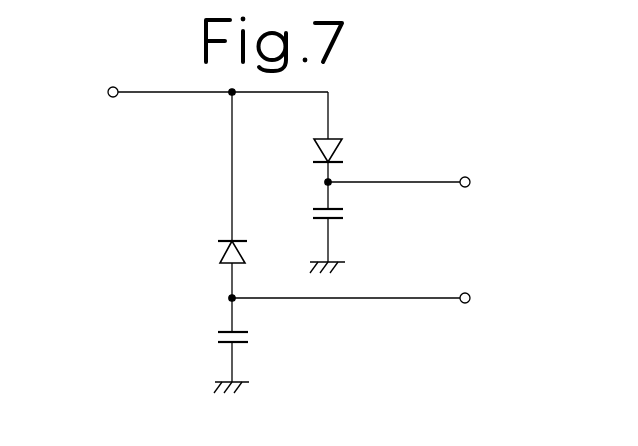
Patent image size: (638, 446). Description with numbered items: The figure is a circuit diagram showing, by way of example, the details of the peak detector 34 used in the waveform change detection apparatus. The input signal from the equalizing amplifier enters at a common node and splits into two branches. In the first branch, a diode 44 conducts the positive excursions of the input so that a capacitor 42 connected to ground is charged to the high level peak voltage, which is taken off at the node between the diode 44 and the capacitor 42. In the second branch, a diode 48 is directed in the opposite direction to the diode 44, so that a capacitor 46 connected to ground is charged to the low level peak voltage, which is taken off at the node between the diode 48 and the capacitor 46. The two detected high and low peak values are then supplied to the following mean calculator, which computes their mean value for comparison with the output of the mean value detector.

The peak detector 34 is at (413, 417).
The diode 44 is at (338, 148).
The capacitor 42 is at (331, 219).
The diode 48 is at (220, 253).
The capacitor 46 is at (236, 343).